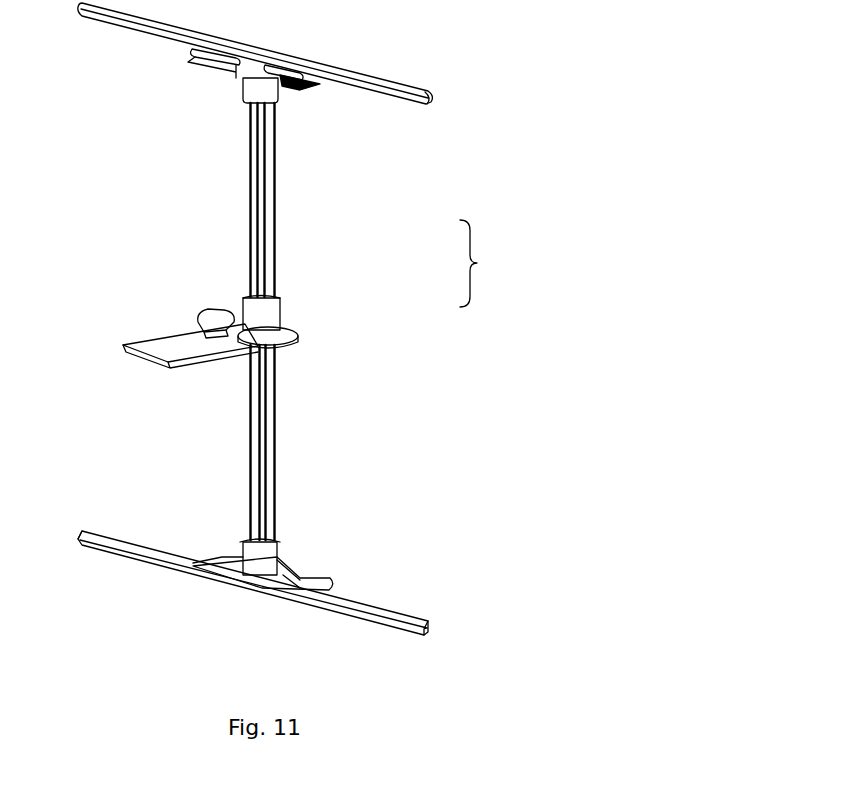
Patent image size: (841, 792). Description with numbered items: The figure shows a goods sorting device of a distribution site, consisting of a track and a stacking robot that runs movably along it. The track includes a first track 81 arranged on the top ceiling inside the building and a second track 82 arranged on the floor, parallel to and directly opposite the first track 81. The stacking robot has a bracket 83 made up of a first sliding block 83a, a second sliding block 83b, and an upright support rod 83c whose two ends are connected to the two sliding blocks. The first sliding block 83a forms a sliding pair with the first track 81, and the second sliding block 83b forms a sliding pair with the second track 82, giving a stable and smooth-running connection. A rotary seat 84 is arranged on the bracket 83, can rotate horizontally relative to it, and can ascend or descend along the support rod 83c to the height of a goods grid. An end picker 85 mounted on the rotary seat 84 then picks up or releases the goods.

The first track 81 is at (390, 98).
The second track 82 is at (385, 607).
The bracket 83 is at (489, 263).
The first sliding block 83a is at (266, 95).
The second sliding block 83b is at (310, 573).
The support rod 83c is at (264, 284).
The rotary seat 84 is at (252, 350).
The end picker 85 is at (150, 335).